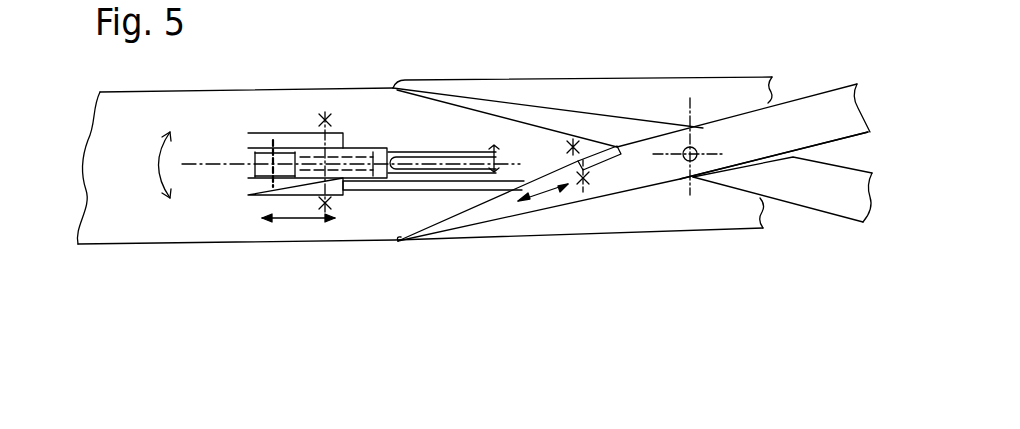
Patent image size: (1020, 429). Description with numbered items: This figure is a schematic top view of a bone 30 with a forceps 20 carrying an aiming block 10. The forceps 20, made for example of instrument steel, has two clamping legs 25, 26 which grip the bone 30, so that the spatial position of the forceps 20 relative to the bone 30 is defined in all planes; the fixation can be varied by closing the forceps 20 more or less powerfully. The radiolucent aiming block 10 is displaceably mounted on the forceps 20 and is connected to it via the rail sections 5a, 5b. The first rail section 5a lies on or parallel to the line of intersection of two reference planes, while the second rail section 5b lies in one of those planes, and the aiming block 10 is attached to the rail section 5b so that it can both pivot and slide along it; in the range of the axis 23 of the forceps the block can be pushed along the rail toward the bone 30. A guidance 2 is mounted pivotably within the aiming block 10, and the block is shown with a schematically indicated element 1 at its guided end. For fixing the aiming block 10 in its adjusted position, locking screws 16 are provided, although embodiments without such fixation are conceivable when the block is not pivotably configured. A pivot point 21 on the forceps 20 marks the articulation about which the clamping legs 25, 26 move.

The piston rod 1 is at (446, 160).
The guidance 2 is at (373, 160).
The first portion of the rail 5a is at (602, 162).
The second portion of the rail 5b is at (392, 187).
The aiming block 10 is at (312, 142).
The locking screws 16 is at (322, 207).
The forceps 20 is at (808, 207).
The pivot 21 is at (693, 148).
The axis of the forceps 23 is at (584, 184).
The clamping leg 25 is at (490, 100).
The clamping leg 26 is at (490, 218).
The bone 30 is at (132, 224).